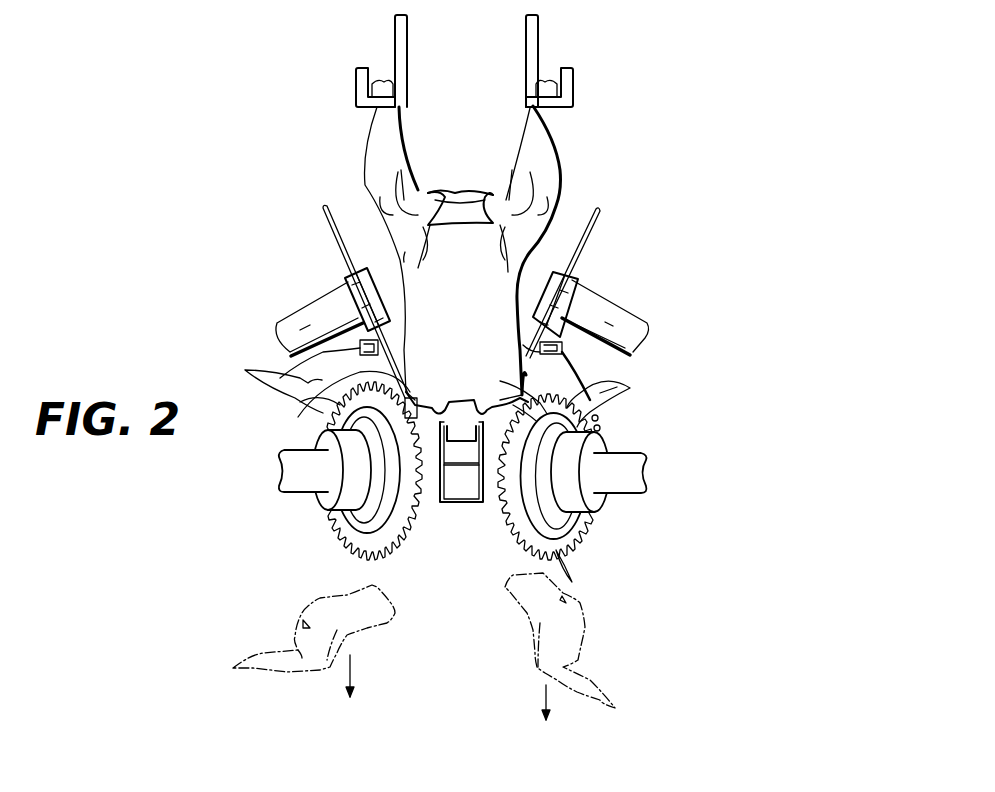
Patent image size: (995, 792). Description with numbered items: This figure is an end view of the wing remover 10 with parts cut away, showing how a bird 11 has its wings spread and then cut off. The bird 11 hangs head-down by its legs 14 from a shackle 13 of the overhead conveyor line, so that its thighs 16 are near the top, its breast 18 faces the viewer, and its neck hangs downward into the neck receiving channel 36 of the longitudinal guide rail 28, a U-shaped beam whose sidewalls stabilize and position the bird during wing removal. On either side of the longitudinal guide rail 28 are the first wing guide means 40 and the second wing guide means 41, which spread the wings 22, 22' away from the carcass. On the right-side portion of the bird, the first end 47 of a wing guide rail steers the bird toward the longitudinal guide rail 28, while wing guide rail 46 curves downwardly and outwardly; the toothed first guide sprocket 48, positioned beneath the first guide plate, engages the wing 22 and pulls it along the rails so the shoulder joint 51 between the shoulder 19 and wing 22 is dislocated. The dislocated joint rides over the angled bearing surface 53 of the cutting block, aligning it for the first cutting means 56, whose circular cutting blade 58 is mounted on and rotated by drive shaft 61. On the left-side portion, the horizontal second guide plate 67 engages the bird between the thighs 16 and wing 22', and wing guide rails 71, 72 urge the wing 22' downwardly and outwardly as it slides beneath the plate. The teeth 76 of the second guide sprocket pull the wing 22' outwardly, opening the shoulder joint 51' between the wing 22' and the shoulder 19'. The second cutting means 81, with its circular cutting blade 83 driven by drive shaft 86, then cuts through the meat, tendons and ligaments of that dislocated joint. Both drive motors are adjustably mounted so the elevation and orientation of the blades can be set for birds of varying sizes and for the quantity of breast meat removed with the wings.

The wing remover 10 is at (608, 150).
The bird 11 is at (555, 207).
The shackle 13 is at (527, 58).
The leg 14 is at (400, 115).
The thigh 16 is at (397, 160).
The breast 18 is at (471, 281).
The shoulder 19 is at (436, 381).
The shoulder 19' is at (492, 385).
The wing 22 is at (270, 401).
The wing 22' is at (624, 389).
The longitudinal guide rail 28 is at (460, 508).
The neck receiving channel 36 is at (485, 470).
The first wing guide means 40 is at (277, 502).
The second wing guide means 41 is at (668, 492).
The wing guide rail 46 is at (380, 349).
The first end of wing guide rail 47 is at (300, 358).
The first guide sprocket 48 is at (390, 546).
The shoulder joint 51 is at (309, 415).
The shoulder joint 51' is at (582, 412).
The angled bearing surface 53 is at (372, 342).
The first cutting means 56 is at (256, 312).
The cutting blade 58 is at (322, 222).
The drive shaft 61 is at (312, 318).
The second guide plate 67 is at (555, 345).
The wing guide rail 71 is at (522, 363).
The wing guide rail 72 is at (568, 349).
The teeth 76 is at (570, 565).
The second cutting means 81 is at (598, 275).
The cutting blade 83 is at (592, 226).
The drive shaft 86 is at (627, 318).